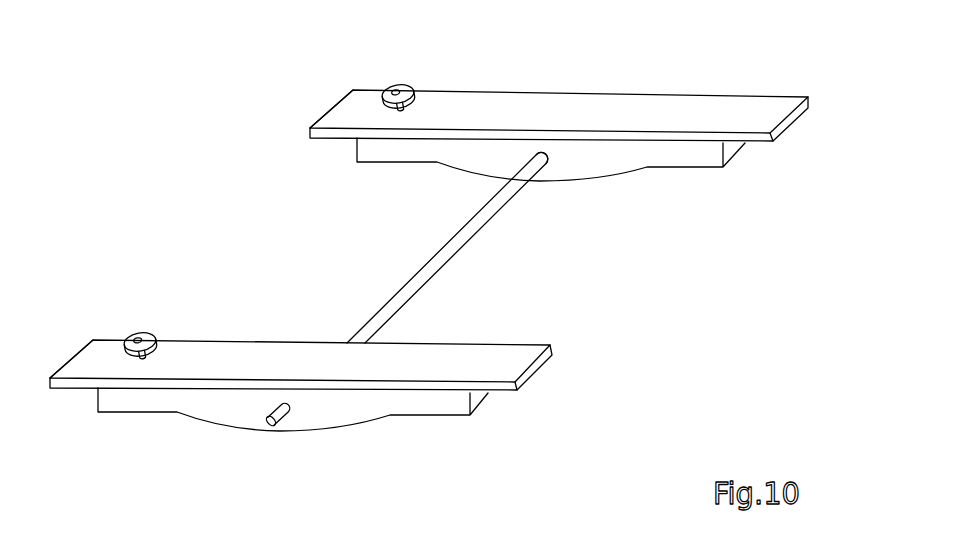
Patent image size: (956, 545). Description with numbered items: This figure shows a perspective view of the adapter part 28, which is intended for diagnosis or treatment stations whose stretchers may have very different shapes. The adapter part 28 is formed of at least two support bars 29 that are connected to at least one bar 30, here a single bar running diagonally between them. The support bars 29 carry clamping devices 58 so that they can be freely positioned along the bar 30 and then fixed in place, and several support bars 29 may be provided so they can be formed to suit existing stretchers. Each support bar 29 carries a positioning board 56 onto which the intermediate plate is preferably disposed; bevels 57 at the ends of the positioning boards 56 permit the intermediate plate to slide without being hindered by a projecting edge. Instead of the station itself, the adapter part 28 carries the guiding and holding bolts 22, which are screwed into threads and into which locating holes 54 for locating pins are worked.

The guiding and holding bolt 22 is at (390, 89).
The adapter part 28 is at (285, 240).
The support bar 29 is at (668, 153).
The bar 30 is at (452, 250).
The locating hole 54 is at (401, 86).
The positioning board 56 is at (548, 107).
The bevel 57 is at (330, 113).
The clamping device 58 is at (548, 170).